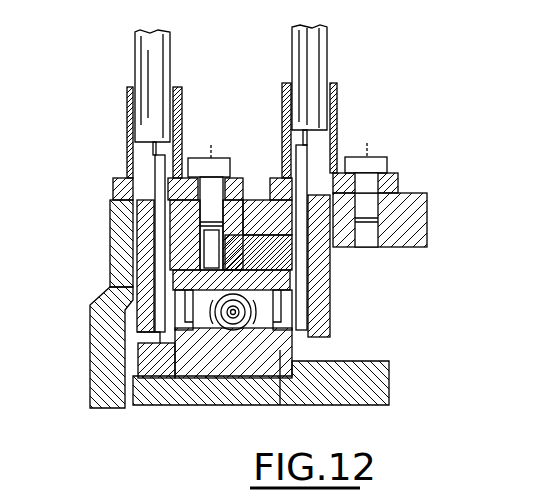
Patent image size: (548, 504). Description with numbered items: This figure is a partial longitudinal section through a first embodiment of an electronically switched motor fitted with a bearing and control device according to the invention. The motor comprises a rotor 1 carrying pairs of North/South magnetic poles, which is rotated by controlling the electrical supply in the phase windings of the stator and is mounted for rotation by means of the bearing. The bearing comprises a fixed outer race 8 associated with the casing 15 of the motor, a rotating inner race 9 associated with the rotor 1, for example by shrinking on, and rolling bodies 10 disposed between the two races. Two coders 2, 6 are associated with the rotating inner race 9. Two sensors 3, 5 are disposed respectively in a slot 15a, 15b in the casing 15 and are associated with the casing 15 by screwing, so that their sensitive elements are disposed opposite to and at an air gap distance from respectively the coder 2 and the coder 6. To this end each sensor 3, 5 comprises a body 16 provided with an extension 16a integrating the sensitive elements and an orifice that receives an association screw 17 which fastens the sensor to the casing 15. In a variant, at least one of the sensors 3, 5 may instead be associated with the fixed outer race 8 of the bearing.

The rotor 1 is at (385, 378).
The coder 2 is at (199, 340).
The sensor 3 is at (116, 183).
The sensor 5 is at (337, 118).
The coder 6 is at (285, 307).
The fixed outer race 8 is at (283, 248).
The rotating inner race 9 is at (280, 405).
The rolling bodies 10 is at (231, 316).
The casing 15 is at (412, 193).
The slot 15a is at (135, 273).
The slot 15b is at (302, 337).
The body 16 is at (110, 197).
The extension 16a is at (147, 327).
The association screw 17 is at (213, 158).